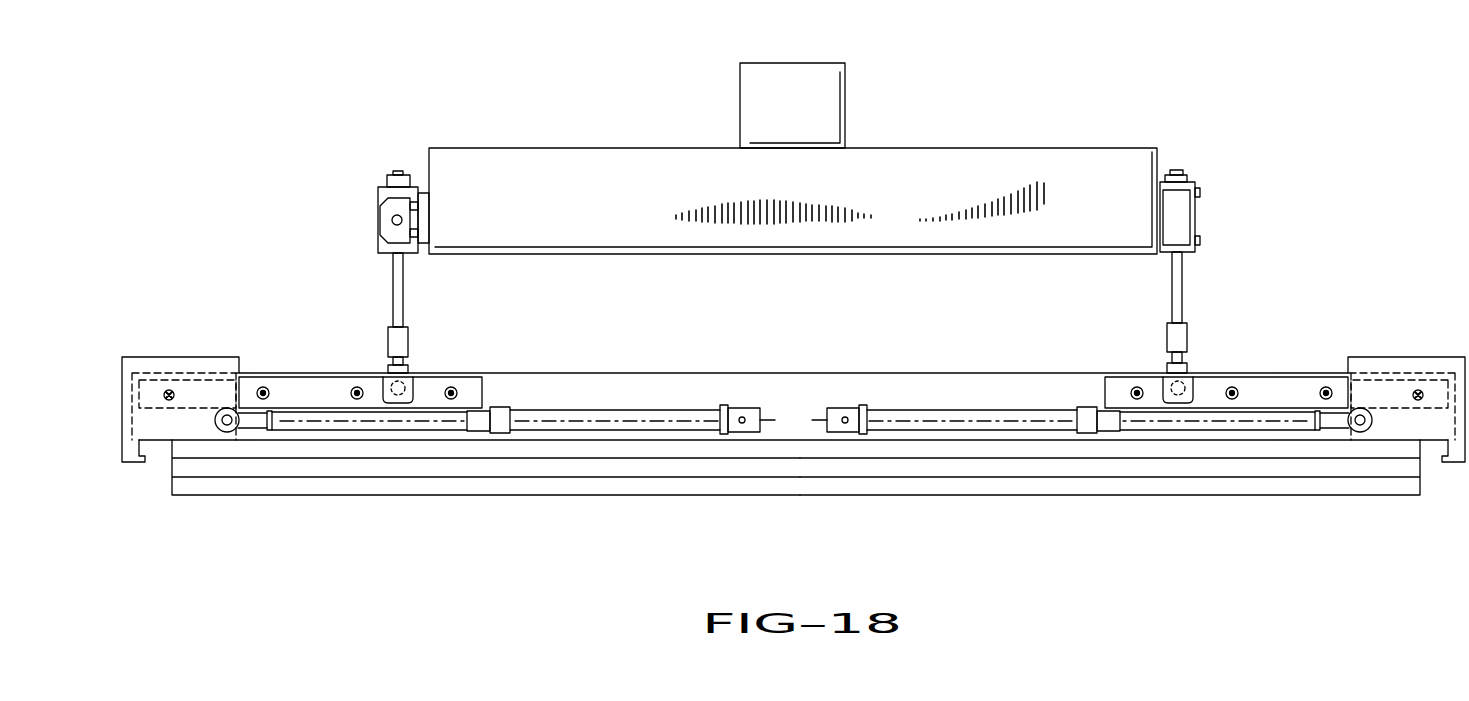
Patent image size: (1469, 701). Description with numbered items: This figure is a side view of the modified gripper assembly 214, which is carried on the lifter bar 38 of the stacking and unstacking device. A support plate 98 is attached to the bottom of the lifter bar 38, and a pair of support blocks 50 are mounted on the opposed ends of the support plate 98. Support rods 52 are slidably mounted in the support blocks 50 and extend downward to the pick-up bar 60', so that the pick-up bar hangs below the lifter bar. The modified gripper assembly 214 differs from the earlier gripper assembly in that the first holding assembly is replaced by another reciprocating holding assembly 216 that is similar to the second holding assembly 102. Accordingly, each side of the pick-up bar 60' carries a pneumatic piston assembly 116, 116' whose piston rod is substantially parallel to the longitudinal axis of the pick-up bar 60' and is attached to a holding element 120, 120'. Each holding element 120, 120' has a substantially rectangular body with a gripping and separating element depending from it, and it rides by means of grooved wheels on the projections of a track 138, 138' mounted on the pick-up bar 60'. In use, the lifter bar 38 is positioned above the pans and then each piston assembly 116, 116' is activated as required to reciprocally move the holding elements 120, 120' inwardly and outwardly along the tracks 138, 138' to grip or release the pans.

The lifter bar 38 is at (757, 97).
The support plate 98 is at (553, 215).
The support block 50 is at (378, 200).
The support rod 52 is at (398, 290).
The pick-up bar 60' is at (793, 372).
The holding element 120 is at (179, 373).
The holding element 120' is at (1406, 373).
The track 138 is at (360, 369).
The track 138' is at (1226, 366).
The second pneumatic piston assembly 116 is at (495, 373).
The pneumatic piston assembly 116' is at (1092, 373).
The second holding assembly 102 is at (324, 501).
The reciprocating holding assembly 216 is at (1332, 501).
The modified gripper assembly 214 is at (1288, 246).